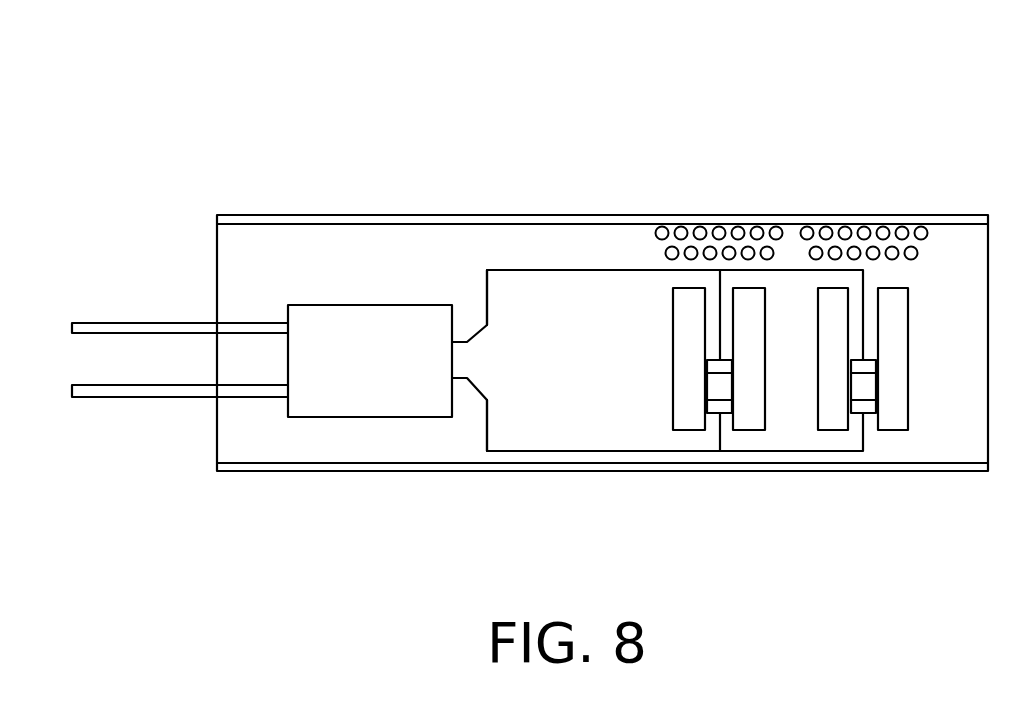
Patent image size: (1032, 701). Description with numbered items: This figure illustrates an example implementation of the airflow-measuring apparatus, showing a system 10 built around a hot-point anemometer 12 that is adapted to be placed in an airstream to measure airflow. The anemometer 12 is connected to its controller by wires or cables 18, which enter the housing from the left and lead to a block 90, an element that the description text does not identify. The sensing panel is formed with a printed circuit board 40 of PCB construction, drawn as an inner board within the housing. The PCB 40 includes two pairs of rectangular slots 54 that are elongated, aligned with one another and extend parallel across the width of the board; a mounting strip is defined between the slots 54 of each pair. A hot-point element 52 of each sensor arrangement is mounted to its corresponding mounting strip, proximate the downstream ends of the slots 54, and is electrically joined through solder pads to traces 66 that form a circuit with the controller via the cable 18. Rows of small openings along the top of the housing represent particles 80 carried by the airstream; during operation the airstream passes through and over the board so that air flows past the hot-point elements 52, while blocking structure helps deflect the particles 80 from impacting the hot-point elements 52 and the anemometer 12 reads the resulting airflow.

The system 10 is at (600, 252).
The hot-point anemometer 12 is at (602, 343).
The cable 18 is at (135, 385).
The printed circuit board 40 is at (585, 245).
The hot-point element 52 is at (725, 388).
The rectangular slots 54 is at (745, 430).
The traces 66 is at (513, 275).
The particles 80 is at (768, 218).
The electronics module 90 is at (368, 395).